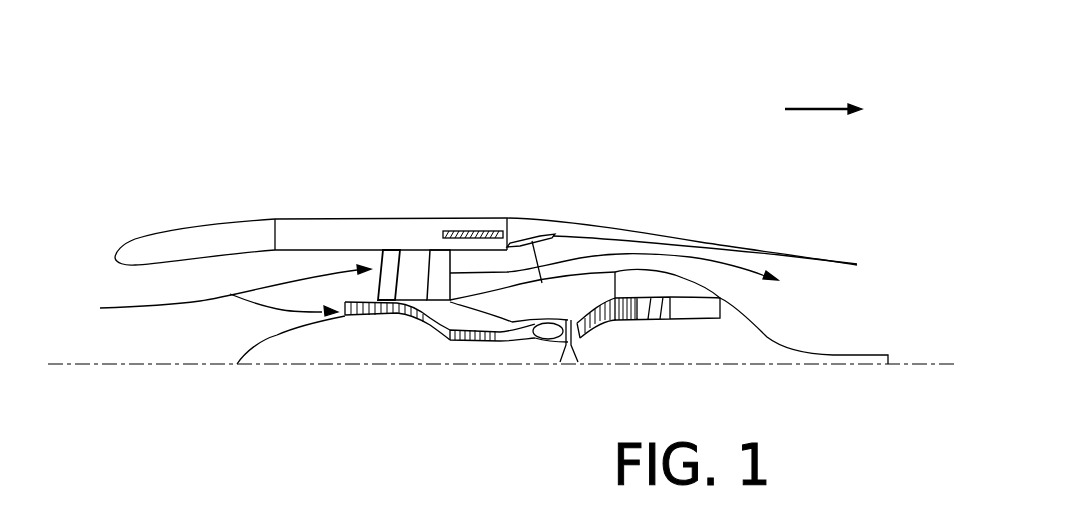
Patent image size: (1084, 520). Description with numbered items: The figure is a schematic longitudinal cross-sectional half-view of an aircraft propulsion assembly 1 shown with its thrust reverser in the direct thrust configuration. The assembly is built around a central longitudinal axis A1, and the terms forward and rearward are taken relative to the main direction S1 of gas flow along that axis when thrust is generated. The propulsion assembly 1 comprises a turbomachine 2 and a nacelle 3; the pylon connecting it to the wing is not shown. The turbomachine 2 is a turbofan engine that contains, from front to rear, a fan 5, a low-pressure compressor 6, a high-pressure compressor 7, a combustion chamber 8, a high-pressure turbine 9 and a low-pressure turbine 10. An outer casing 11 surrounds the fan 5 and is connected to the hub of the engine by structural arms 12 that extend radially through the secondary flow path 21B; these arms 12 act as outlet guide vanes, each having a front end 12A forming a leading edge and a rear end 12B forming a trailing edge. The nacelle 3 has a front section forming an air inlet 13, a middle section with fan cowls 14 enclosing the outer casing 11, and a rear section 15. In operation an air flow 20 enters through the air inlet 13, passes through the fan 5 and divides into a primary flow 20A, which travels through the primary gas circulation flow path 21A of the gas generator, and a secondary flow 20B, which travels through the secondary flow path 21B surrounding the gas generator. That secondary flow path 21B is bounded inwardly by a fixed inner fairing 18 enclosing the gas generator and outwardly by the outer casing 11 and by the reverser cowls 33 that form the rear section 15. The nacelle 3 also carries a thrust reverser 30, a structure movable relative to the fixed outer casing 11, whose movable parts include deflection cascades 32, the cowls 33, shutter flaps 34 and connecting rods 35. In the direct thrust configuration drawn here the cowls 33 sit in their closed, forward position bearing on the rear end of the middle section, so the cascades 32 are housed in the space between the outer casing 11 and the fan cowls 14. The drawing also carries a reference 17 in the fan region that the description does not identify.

The propulsion assembly 1 is at (112, 150).
The turbomachine 2 is at (840, 318).
The nacelle 3 is at (583, 66).
The fan 5 is at (277, 334).
The low-pressure compressor 6 is at (380, 325).
The high-pressure compressor 7 is at (452, 344).
The combustion chamber 8 is at (545, 365).
The high-pressure turbine 9 is at (603, 335).
The low-pressure turbine 10 is at (655, 335).
The outer casing 11 is at (338, 314).
The structural arms 12 is at (432, 264).
The front end 12A is at (415, 282).
The rear end 12B is at (428, 302).
The air inlet 13 is at (180, 226).
The fan cowls 14 is at (383, 218).
The rear section 15 is at (680, 162).
The reverser cowls 33 is at (562, 222).
The fan 17 is at (344, 315).
The fixed inner fairing 18 is at (744, 300).
The air flow 20 is at (143, 306).
The primary flow 20A is at (257, 301).
The secondary flow 20B is at (282, 333).
The primary gas circulation flow path 21A is at (510, 287).
The secondary flow path 21B is at (635, 247).
The thrust reverser 30 is at (493, 172).
The deflection cascades 32 is at (455, 231).
The shutter flaps 34 is at (556, 230).
The connecting rods 35 is at (462, 360).
The central longitudinal axis A1 is at (65, 367).
The main direction of gas flow S1 is at (820, 108).